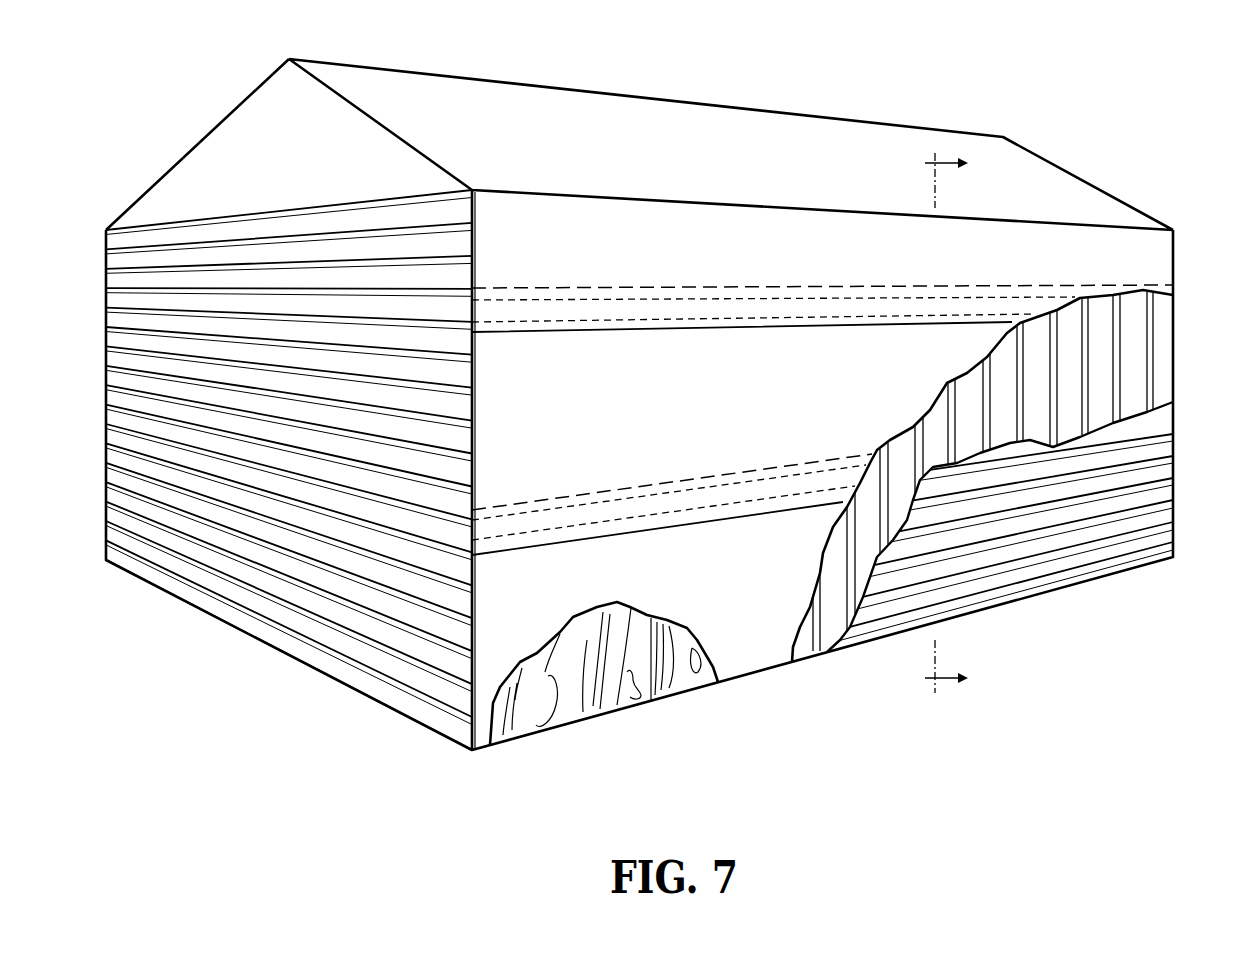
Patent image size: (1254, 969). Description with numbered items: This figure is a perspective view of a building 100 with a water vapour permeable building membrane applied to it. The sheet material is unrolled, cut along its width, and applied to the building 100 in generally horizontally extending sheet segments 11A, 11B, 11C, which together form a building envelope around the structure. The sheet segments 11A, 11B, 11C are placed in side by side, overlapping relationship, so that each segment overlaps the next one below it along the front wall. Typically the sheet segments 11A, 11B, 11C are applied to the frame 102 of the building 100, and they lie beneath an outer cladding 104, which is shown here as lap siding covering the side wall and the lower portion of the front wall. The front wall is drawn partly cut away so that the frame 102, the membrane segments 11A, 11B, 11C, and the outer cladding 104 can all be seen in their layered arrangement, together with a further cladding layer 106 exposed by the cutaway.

The building 100 is at (1158, 88).
The frame 102 is at (633, 697).
The outer cladding 104 is at (360, 673).
The vertical board siding 106 is at (1165, 340).
The sheet segment 11A is at (758, 261).
The sheet segment 11B is at (758, 430).
The sheet segment 11C is at (758, 600).